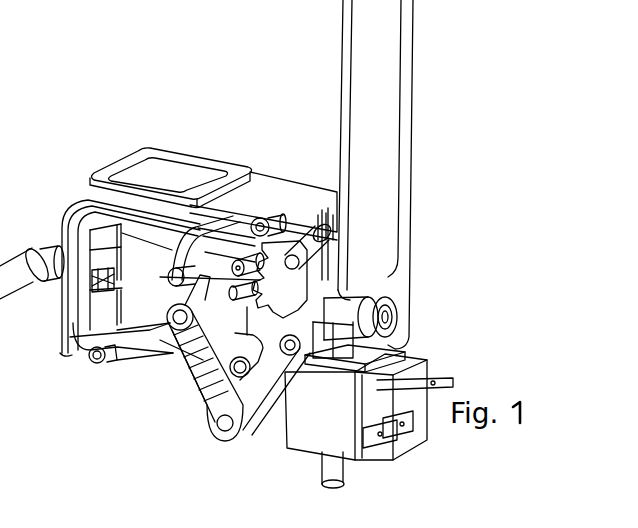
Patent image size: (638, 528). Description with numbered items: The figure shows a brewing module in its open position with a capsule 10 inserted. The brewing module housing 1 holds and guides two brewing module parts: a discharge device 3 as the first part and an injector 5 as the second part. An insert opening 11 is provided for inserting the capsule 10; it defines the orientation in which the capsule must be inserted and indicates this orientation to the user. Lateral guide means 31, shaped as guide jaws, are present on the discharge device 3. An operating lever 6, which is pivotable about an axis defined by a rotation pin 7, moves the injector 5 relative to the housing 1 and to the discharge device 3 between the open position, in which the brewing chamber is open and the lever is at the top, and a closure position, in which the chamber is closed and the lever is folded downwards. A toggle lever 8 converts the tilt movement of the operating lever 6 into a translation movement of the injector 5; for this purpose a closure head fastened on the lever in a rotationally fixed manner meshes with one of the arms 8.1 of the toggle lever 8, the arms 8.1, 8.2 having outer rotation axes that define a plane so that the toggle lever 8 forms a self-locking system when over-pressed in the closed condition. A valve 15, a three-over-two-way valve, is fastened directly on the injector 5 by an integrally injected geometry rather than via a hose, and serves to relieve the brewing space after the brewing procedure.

The brewing module housing 1 is at (272, 203).
The discharge device 3 is at (75, 313).
The injector 5 is at (223, 315).
The operating lever 6 is at (378, 92).
The rotation pin 7 is at (300, 262).
The toggle lever 8 is at (223, 427).
The arm of the toggle lever 8.1 is at (247, 387).
The arm of the toggle lever 8.2 is at (200, 373).
The capsule 10 is at (147, 290).
The insert opening 11 is at (160, 183).
The valve 15 is at (357, 387).
The lateral guide means 31 is at (108, 268).